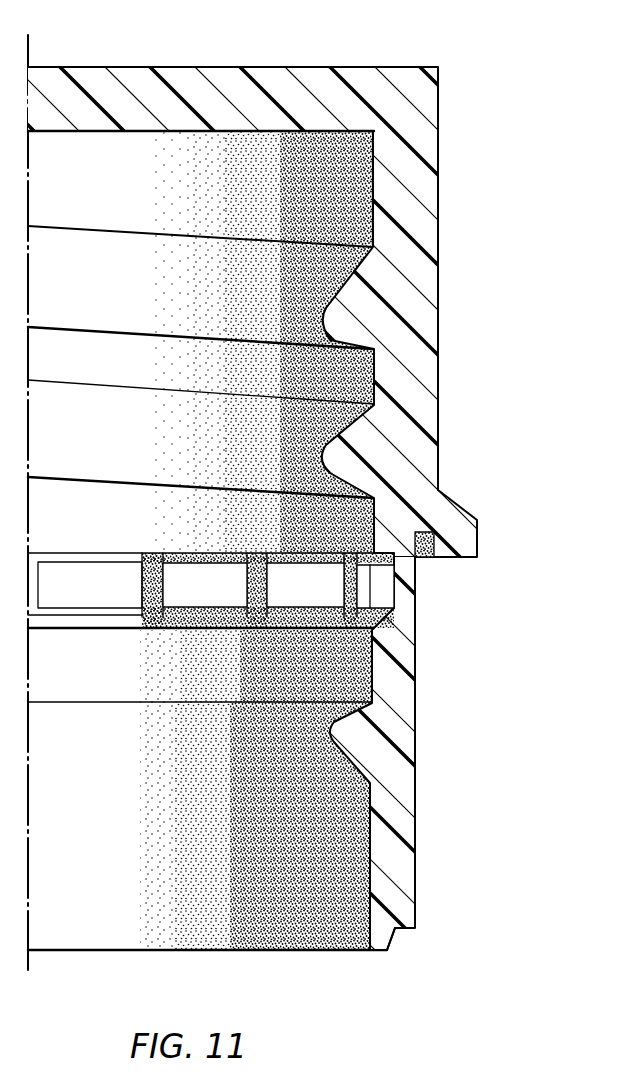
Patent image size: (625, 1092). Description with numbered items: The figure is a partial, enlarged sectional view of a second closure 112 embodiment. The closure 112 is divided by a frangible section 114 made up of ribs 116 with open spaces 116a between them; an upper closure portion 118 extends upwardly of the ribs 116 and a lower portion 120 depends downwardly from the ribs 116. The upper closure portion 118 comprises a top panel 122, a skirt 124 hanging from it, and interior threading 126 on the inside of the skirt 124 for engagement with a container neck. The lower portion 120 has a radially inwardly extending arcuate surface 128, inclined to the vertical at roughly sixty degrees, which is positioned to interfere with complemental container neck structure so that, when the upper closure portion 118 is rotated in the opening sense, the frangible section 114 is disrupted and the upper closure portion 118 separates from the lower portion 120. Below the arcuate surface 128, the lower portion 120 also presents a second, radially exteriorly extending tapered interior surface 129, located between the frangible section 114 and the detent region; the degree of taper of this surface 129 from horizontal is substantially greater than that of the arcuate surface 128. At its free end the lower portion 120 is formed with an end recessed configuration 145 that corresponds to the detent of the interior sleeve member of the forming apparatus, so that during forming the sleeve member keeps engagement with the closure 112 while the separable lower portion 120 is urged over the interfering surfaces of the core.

The closure 112 is at (312, 546).
The frangible section 114 is at (435, 590).
The ribs 116 is at (352, 585).
The open spaces 116a is at (227, 600).
The upper closure portion 118 is at (468, 422).
The lower portion 120 is at (436, 788).
The top panel 122 is at (277, 82).
The skirt 124 is at (424, 236).
The interior threading 126 is at (207, 315).
The arcuate surface 128 is at (345, 708).
The second radially exteriorly extending tapered interior surface 129 is at (343, 760).
The end recessed configuration 145 is at (397, 938).